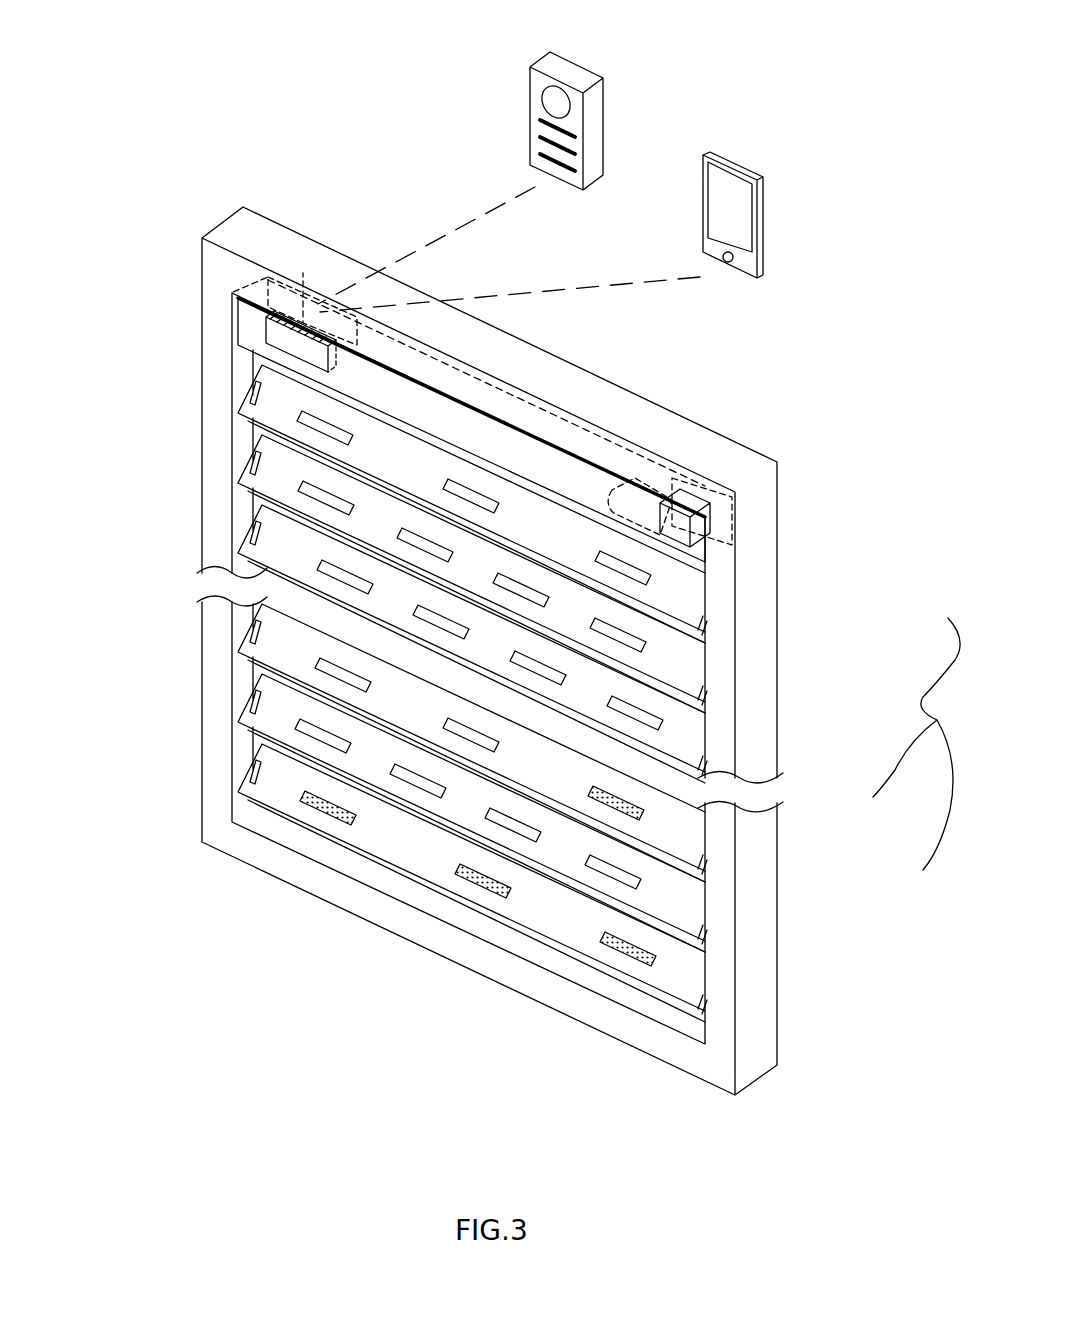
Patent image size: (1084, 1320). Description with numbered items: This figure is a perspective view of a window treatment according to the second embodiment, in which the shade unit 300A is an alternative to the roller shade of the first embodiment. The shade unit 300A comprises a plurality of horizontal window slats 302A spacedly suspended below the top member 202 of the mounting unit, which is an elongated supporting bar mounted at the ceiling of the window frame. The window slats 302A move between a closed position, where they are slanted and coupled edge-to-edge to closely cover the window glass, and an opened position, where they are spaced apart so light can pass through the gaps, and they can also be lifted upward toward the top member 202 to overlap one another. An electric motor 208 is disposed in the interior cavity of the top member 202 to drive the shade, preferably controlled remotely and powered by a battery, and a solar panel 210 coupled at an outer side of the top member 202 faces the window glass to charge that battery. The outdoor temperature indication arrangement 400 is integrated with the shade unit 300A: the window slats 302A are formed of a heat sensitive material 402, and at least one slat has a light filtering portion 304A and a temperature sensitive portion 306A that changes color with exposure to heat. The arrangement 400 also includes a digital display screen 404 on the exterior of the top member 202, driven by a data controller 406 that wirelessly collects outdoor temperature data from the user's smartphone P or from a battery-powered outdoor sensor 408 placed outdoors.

The outdoor temperature indication arrangement 400 is at (650, 1100).
The top member 202 is at (446, 341).
The electric motor 208 is at (650, 485).
The solar panel 210 is at (303, 313).
The display screen 404 is at (287, 350).
The data controller 406 is at (285, 320).
The outdoor sensor 408 is at (588, 118).
The smartphone P is at (755, 210).
The shade unit 300A is at (556, 727).
The window slats 302A is at (680, 595).
The light filtering portion 304A is at (405, 843).
The temperature sensitive portion 306A is at (338, 813).
The heat sensitive material 402 is at (404, 945).